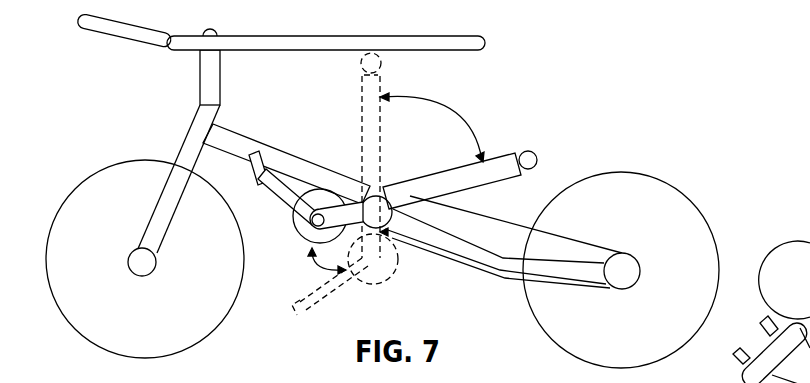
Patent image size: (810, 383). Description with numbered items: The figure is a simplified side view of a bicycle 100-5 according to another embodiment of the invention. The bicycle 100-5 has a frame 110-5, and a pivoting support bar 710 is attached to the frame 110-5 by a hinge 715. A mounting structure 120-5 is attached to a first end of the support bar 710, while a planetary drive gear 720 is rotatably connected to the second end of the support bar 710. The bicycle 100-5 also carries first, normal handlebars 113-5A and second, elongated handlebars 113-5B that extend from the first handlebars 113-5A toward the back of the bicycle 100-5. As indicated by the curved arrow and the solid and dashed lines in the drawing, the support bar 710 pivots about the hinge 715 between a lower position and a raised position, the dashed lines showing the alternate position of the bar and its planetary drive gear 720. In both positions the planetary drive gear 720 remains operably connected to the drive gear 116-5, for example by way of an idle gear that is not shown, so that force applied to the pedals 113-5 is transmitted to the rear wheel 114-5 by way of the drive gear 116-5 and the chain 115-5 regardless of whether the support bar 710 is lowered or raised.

The bicycle 100-5 is at (566, 96).
The frame 110-5 is at (188, 129).
The pedals 113-5 is at (262, 163).
The first handlebars 113-5A is at (143, 33).
The second handlebars 113-5B is at (340, 42).
The rear wheel 114-5 is at (661, 206).
The chain 115-5 is at (477, 204).
The drive gear 116-5 is at (350, 182).
The mounting structure 120-5 is at (544, 152).
The pivoting support bar 710 is at (370, 123).
The hinge 715 is at (382, 184).
The planetary drive gear 720 is at (303, 219).